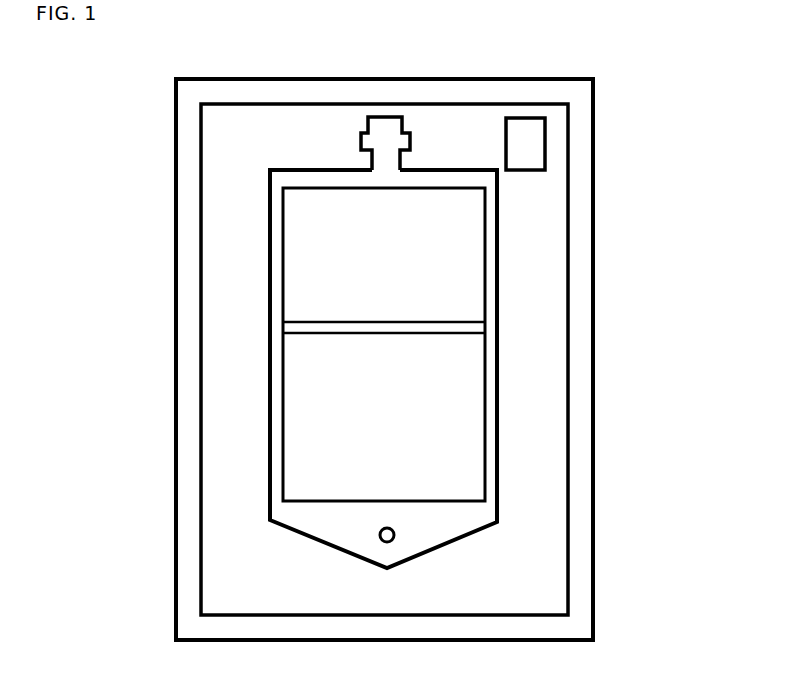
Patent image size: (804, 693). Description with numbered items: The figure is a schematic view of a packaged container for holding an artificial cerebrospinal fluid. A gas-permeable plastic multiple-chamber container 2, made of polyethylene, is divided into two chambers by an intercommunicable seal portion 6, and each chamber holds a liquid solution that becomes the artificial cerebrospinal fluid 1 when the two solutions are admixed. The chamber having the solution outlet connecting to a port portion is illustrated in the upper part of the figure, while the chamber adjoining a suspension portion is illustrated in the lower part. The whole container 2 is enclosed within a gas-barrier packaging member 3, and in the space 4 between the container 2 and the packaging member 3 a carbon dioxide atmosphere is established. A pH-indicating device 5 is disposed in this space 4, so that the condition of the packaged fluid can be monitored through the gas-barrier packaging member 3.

The artificial cerebrospinal fluid 1 is at (327, 380).
The gas-permeable plastic multiple-chamber container 2 is at (500, 300).
The gas-barrier packaging member 3 is at (580, 125).
The space between the container and the packaging member 4 is at (535, 482).
The pH-indicating device 5 is at (530, 158).
The intercommunicable seal portion 6 is at (420, 328).